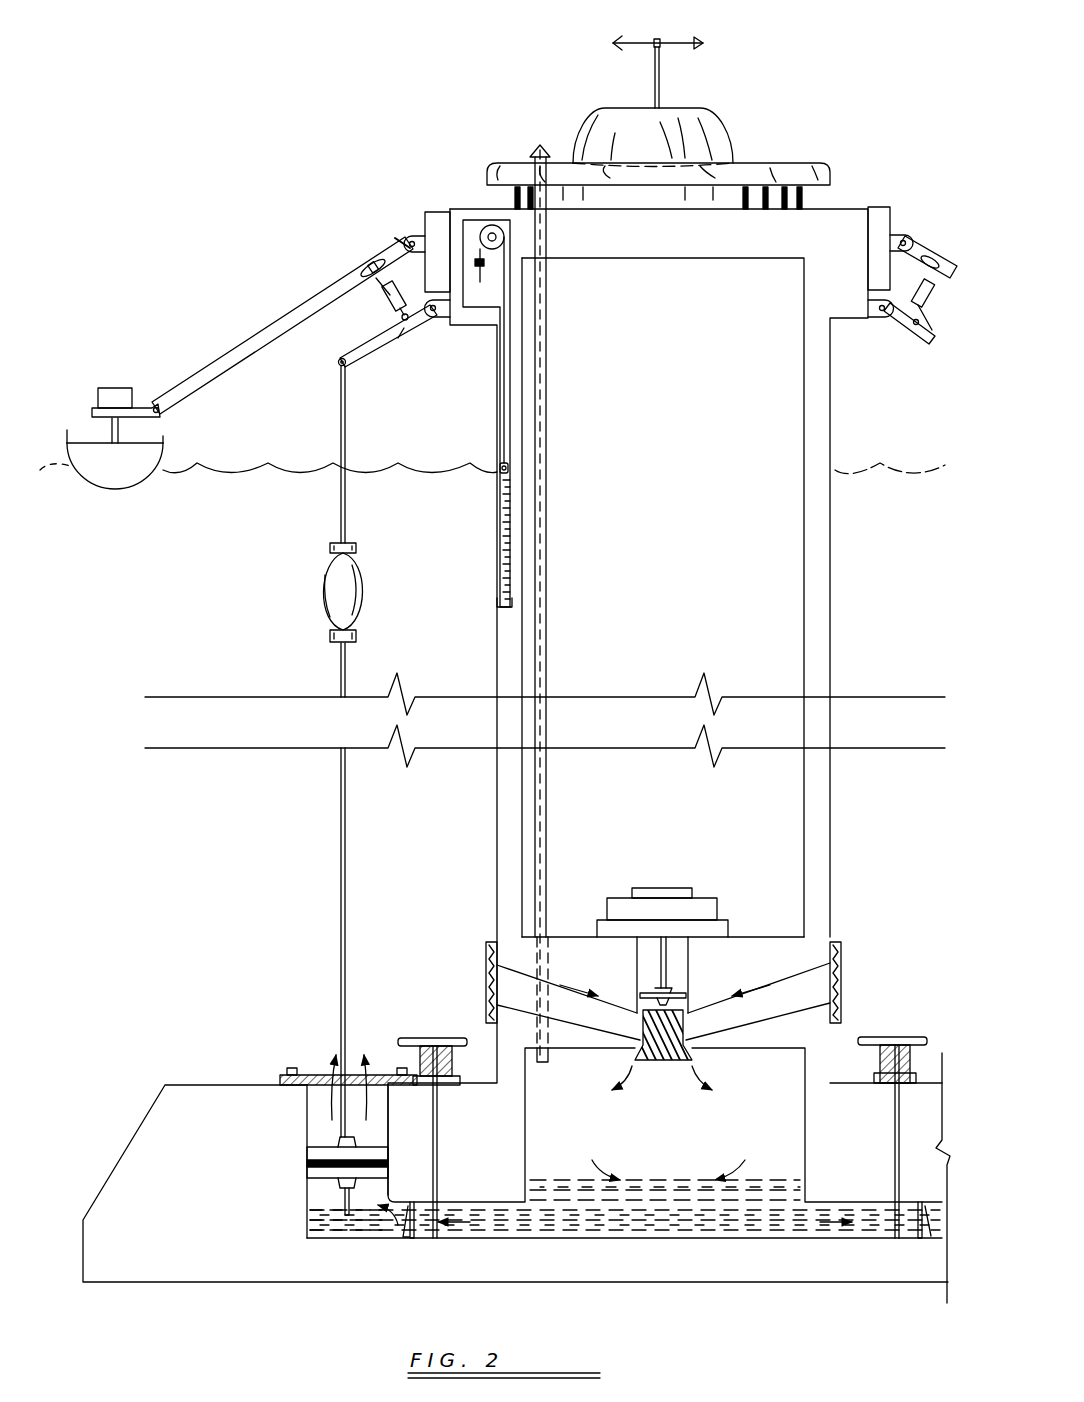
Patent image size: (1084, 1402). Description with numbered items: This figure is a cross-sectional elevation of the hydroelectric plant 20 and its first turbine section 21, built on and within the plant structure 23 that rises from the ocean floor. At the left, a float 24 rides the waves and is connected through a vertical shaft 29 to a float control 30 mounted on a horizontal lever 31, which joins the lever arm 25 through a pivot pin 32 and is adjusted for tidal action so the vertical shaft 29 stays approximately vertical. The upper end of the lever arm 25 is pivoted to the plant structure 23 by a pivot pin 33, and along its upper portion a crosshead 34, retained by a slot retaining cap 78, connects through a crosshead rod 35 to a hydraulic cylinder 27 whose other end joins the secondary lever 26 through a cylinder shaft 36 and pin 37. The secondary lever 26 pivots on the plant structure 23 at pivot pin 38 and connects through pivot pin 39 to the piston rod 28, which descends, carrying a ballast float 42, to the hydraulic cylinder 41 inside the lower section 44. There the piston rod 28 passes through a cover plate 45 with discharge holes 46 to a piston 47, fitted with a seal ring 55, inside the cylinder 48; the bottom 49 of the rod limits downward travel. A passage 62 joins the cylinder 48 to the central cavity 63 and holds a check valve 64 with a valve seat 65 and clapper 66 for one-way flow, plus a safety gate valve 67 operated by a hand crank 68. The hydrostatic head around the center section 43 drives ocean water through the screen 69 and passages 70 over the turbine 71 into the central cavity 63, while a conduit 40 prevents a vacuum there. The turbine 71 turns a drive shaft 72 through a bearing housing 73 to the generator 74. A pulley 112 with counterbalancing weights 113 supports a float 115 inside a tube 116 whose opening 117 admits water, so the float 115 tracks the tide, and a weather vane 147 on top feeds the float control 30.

The hydroelectric plant 20 is at (820, 110).
The first turbine section 21 is at (592, 125).
The plant structure 23 is at (877, 207).
The float 24 is at (163, 452).
The lever arm 25 is at (264, 323).
The secondary lever 26 is at (366, 357).
The hydraulic cylinder 27 is at (390, 302).
The piston rod 28 is at (340, 421).
The vertical shaft 29 is at (100, 429).
The float control 30 is at (118, 388).
The horizontal lever 31 is at (142, 405).
The pivot pin 32 is at (160, 412).
The pivot pin 33 is at (411, 240).
The crosshead 34 is at (370, 255).
The crosshead rod 35 is at (376, 282).
The cylinder shaft 36 is at (406, 325).
The pin 37 is at (408, 320).
The pivot pin 38 is at (437, 314).
The pivot pin 39 is at (338, 362).
The conduit 40 is at (550, 612).
The hydraulic cylinder 41 is at (300, 1097).
The ballast float 42 is at (320, 580).
The center section 43 is at (836, 577).
The lower section 44 is at (931, 1070).
The cover plate 45 is at (374, 1074).
The discharge holes 46 is at (317, 1076).
The piston 47 is at (318, 1178).
The cylinder 48 is at (312, 1114).
The bottom 49 is at (347, 1222).
The seal ring 55 is at (316, 1156).
The passage 62 is at (493, 1232).
The central cavity 63 is at (651, 1154).
The check valve 64 is at (412, 1246).
The valve seat 65 is at (412, 1203).
The clapper 66 is at (404, 1230).
The gate valve 67 is at (438, 1155).
The hand crank 68 is at (432, 1040).
The screen 69 is at (486, 977).
The passages 70 is at (726, 1013).
The turbine 71 is at (660, 1058).
The drive shaft 72 is at (658, 957).
The bearing housing 73 is at (672, 993).
The generator 74 is at (700, 898).
The slot retaining cap 78 is at (362, 266).
The pulley 112 is at (485, 228).
The counterbalancing weights 113 is at (479, 276).
The float 115 is at (502, 466).
The tube 116 is at (503, 532).
The opening 117 is at (498, 606).
The weather vane 147 is at (678, 43).